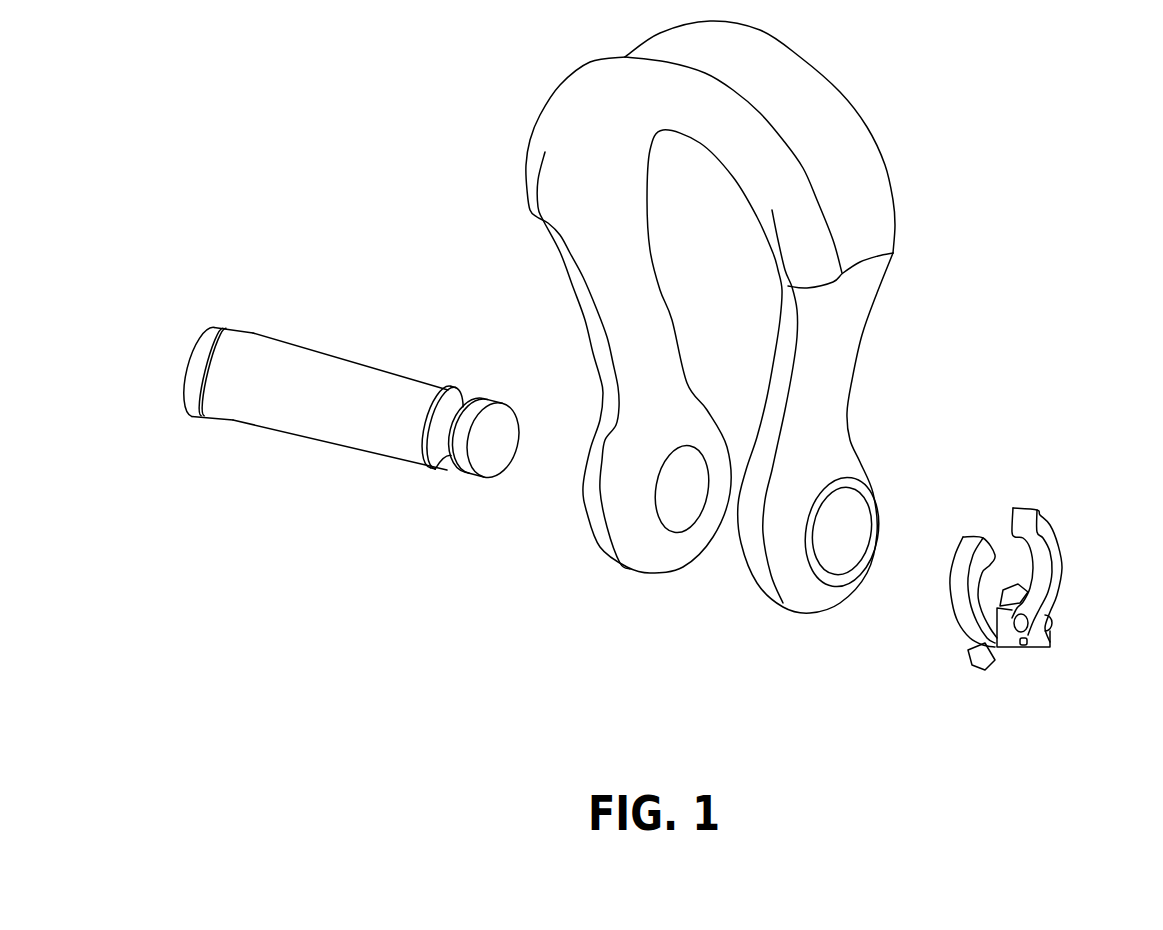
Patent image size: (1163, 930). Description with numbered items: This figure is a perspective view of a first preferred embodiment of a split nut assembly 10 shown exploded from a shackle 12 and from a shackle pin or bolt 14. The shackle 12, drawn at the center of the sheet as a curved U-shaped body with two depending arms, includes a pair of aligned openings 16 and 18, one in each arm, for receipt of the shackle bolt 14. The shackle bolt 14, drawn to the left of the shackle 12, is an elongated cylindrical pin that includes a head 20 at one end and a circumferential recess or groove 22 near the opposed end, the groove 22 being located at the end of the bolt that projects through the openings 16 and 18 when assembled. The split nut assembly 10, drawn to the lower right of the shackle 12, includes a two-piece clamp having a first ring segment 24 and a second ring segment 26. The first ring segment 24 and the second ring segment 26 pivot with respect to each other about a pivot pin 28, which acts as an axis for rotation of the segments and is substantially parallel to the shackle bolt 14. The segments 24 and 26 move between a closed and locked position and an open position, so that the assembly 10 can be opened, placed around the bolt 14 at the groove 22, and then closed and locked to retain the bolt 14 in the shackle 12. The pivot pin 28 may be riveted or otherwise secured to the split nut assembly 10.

The split nut assembly 10 is at (973, 690).
The shackle 12 is at (863, 296).
The shackle pin or bolt 14 is at (357, 383).
The opening 16 is at (667, 517).
The opening 18 is at (855, 510).
The head 20 is at (225, 327).
The circumferential recess or groove 22 is at (463, 407).
The first ring segment 24 is at (960, 565).
The second ring segment 26 is at (1053, 542).
The pivot pin 28 is at (1026, 626).